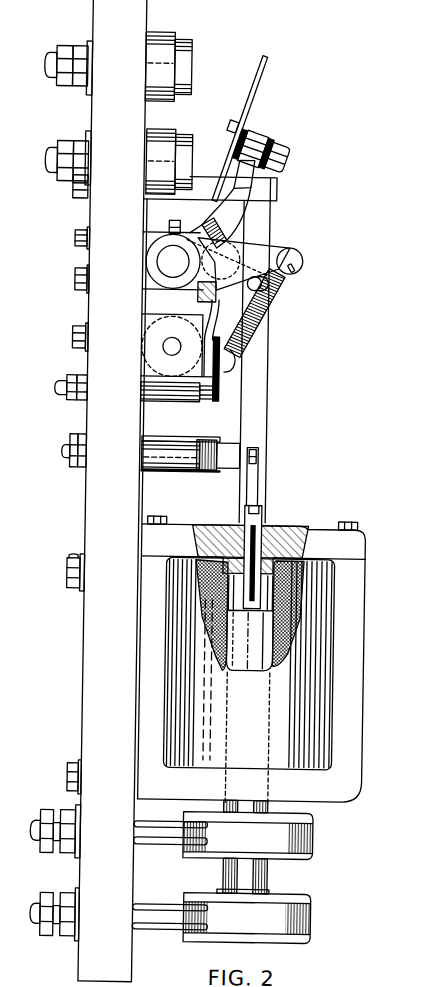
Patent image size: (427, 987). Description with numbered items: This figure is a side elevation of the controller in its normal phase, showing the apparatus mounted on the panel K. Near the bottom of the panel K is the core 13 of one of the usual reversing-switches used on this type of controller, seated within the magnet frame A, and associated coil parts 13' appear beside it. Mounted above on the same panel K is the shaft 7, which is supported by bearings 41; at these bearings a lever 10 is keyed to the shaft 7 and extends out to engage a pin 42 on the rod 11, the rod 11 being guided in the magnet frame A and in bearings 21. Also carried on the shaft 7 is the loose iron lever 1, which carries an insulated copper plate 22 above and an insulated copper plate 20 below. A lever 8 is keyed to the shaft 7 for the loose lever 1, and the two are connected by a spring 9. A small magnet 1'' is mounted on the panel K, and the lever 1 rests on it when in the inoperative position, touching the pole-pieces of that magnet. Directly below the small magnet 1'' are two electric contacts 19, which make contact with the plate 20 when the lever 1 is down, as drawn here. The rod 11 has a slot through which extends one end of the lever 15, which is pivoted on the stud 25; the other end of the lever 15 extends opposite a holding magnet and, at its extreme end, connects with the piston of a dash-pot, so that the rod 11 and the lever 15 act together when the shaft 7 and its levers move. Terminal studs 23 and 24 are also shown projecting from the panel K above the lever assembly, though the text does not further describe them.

The iron lever 1 is at (240, 205).
The small magnet 1'' is at (157, 345).
The shaft 7 is at (167, 261).
The lever 8 is at (296, 267).
The spring 9 is at (272, 297).
The lever 10 is at (232, 288).
The rod 11 is at (257, 407).
The core 13 is at (291, 597).
The magnet coil 13' is at (279, 664).
The lever 15 is at (230, 457).
The electric contact 19 is at (189, 403).
The copper plate 20 is at (218, 385).
The bearing 21 is at (268, 198).
The copper plate 22 is at (254, 83).
The terminal stud 23 is at (186, 63).
The terminal stud 24 is at (162, 147).
The stud 25 is at (182, 457).
The bearing 41 is at (145, 285).
The pin 42 is at (276, 250).
The magnet frame A is at (351, 558).
The panel K is at (112, 491).